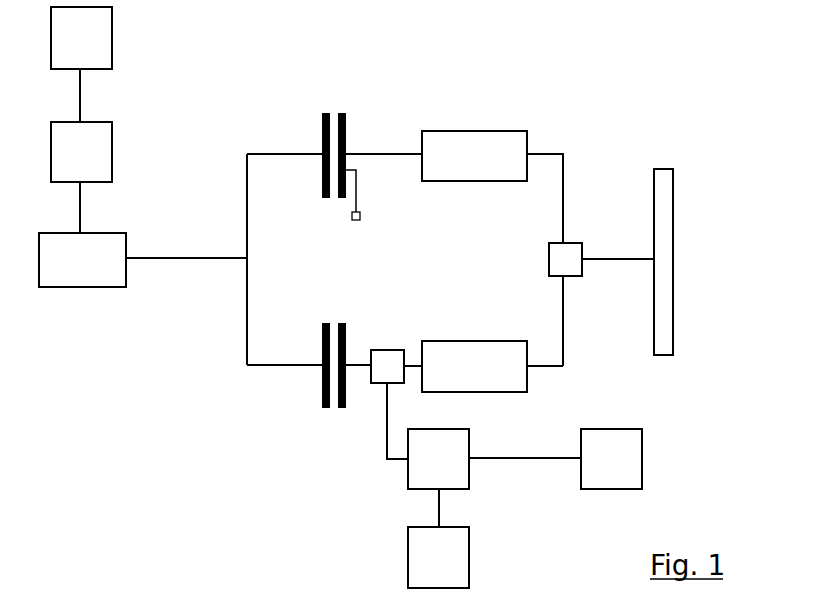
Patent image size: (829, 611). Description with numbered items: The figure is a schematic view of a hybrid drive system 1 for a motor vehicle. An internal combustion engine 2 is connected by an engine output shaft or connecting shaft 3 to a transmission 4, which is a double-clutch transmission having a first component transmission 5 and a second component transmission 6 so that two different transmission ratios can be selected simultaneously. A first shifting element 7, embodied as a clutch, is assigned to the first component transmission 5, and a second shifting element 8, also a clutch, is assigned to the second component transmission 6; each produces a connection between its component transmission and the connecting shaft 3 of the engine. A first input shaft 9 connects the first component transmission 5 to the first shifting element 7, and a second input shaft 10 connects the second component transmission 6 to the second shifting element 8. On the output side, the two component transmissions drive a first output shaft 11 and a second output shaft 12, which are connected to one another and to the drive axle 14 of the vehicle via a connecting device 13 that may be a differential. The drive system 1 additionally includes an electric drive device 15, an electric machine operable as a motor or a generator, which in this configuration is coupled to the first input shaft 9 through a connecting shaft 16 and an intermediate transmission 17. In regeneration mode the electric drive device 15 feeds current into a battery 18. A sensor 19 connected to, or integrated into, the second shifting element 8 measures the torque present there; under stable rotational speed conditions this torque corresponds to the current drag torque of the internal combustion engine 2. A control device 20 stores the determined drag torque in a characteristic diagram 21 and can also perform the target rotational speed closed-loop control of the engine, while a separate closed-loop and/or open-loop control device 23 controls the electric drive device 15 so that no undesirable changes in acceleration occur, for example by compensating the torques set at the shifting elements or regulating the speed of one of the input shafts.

The drive system 1 is at (243, 221).
The internal combustion engine 2 is at (74, 273).
The connecting shaft 3 is at (180, 257).
The transmission 4 is at (591, 164).
The first component transmission 5 is at (467, 379).
The second component transmission 6 is at (467, 169).
The first shifting element 7 is at (322, 392).
The second shifting element 8 is at (322, 141).
The first input shaft 9 is at (365, 367).
The second input shaft 10 is at (394, 152).
The first output shaft 11 is at (552, 370).
The second output shaft 12 is at (553, 153).
The connecting device 13 is at (558, 257).
The drive axle 14 is at (666, 257).
The electric drive device 15 is at (424, 472).
The connecting shaft 16 is at (386, 442).
The intermediate transmission 17 is at (388, 349).
The battery 18 is at (597, 472).
The sensor 19 is at (350, 222).
The control device 20 is at (66, 165).
The characteristic diagram 21 is at (66, 51).
The closed-loop and/or open-loop control device 23 is at (424, 571).